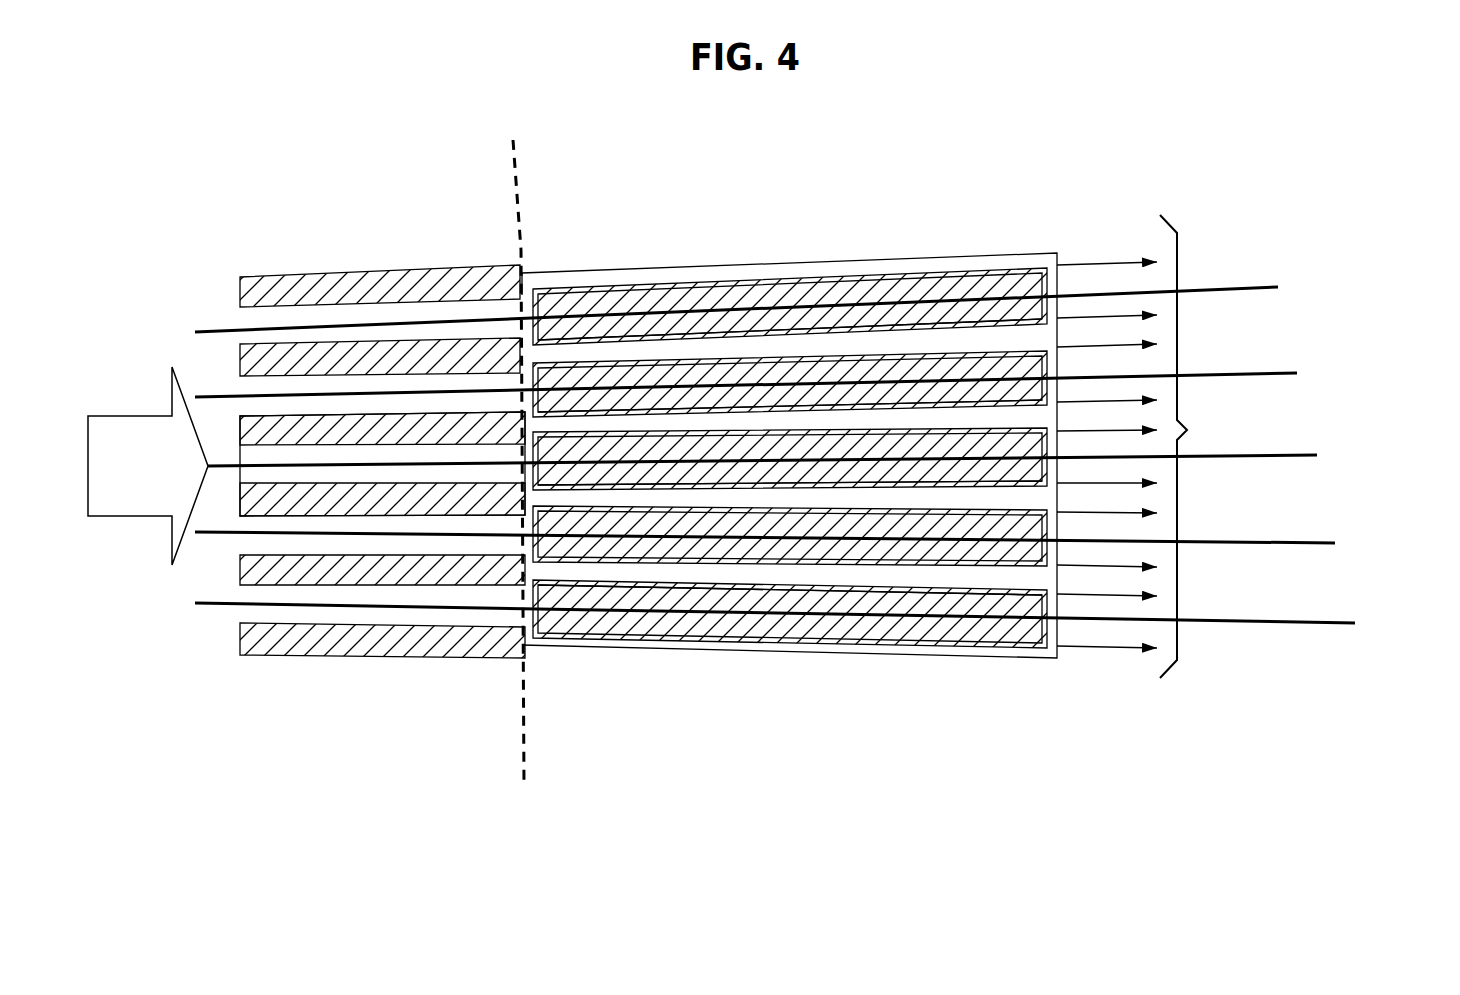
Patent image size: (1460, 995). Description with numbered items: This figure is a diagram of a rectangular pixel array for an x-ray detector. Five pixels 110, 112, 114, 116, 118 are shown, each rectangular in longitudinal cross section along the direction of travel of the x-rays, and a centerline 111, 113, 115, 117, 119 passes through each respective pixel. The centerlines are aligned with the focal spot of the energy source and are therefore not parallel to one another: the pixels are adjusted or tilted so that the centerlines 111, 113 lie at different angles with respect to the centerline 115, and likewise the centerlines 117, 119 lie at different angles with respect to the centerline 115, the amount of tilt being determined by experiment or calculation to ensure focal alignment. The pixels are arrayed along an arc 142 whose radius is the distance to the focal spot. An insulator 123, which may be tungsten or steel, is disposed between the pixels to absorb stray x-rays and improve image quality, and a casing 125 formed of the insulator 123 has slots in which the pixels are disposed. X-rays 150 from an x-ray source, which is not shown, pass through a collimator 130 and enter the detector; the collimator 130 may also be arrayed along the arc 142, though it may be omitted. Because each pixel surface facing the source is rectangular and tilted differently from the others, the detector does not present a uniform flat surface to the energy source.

The pixel 110 is at (860, 290).
The centerline 111 is at (1253, 287).
The pixel 112 is at (903, 365).
The centerline 113 is at (1262, 373).
The pixel 114 is at (960, 455).
The centerline 115 is at (1296, 455).
The pixel 116 is at (998, 545).
The centerline 117 is at (1318, 543).
The pixel 118 is at (960, 620).
The centerline 119 is at (1325, 623).
The insulator 123 is at (636, 350).
The casing 125 is at (1045, 253).
The collimator 130 is at (328, 226).
The arc 142 is at (517, 146).
The x-rays 150 is at (133, 518).